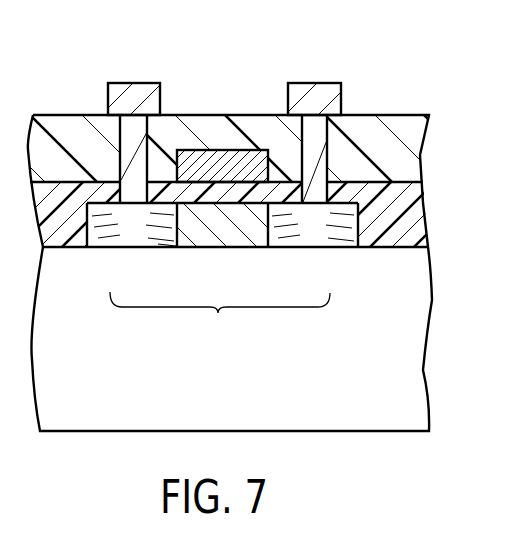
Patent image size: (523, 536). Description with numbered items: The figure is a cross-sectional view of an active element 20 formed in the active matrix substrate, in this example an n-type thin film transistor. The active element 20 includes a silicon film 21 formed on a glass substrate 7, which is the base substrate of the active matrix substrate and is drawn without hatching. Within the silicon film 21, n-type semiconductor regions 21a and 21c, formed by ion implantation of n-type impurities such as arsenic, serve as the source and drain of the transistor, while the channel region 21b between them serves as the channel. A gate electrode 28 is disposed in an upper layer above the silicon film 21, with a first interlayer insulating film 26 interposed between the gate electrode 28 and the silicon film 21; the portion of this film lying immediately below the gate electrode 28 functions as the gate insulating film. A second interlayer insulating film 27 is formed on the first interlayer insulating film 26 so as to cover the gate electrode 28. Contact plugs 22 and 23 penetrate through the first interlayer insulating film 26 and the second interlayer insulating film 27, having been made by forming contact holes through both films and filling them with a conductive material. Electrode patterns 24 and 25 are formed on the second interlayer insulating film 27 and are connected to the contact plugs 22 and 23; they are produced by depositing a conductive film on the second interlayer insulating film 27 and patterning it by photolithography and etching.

The glass substrate 7 is at (418, 329).
The active element 20 is at (220, 322).
The silicon film 21 is at (287, 250).
The n-type semiconductor region 21a is at (142, 248).
The channel region 21b is at (217, 248).
The n-type semiconductor region 21c is at (300, 248).
The contact plug 22 is at (128, 155).
The contact plug 23 is at (315, 150).
The electrode pattern 24 is at (143, 88).
The electrode pattern 25 is at (314, 90).
The first interlayer insulating film 26 is at (410, 198).
The second interlayer insulating film 27 is at (420, 147).
The gate electrode 28 is at (229, 155).